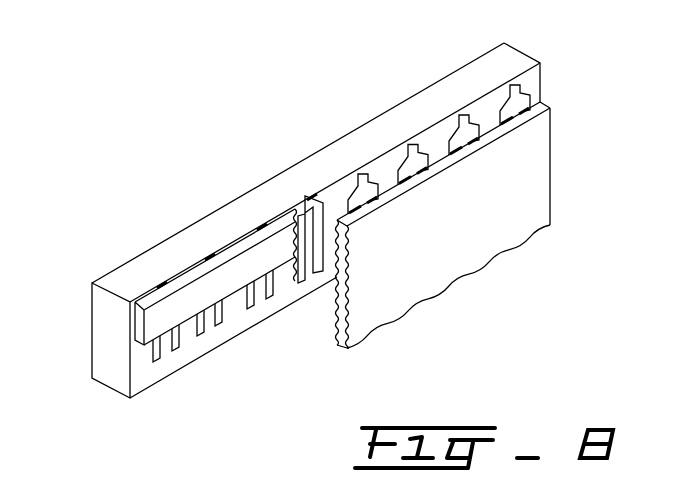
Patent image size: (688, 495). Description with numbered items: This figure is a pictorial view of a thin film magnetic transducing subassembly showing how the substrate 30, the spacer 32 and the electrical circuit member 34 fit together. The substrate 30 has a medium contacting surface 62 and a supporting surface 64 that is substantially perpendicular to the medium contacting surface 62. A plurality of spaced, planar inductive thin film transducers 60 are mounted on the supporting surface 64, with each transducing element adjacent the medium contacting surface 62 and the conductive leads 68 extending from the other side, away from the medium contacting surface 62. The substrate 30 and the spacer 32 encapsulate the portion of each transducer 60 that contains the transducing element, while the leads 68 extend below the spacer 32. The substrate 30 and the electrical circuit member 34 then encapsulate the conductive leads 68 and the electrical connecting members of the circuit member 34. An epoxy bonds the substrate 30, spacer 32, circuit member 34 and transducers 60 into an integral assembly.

The substrate 30 is at (541, 63).
The spacer 32 is at (152, 330).
The electrical circuit member 34 is at (541, 193).
The thin film transducer 60 is at (323, 210).
The medium contacting surface 62 is at (397, 117).
The supporting surface 64 is at (536, 86).
The conductive leads 68 is at (174, 355).